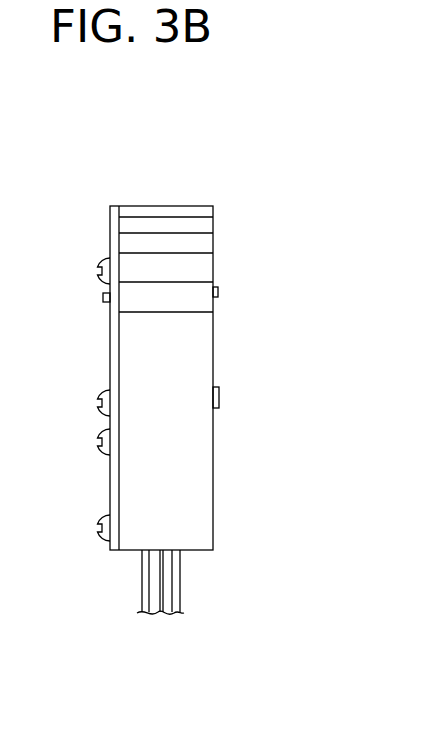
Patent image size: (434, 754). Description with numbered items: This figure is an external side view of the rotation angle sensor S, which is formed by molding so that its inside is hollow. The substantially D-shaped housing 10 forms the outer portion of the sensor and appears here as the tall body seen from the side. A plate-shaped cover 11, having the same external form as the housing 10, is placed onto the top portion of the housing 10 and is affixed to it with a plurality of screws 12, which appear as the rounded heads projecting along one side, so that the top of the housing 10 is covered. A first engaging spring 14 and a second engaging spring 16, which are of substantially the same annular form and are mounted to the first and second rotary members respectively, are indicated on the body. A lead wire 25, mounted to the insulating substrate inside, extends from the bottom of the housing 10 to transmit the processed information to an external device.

The rotation angle sensor S is at (161, 182).
The housing 10 is at (197, 218).
The cover 11 is at (98, 219).
The screws 12 is at (100, 393).
The first engaging spring 14 is at (110, 320).
The second engaging spring 16 is at (213, 312).
The lead wire 25 is at (181, 578).